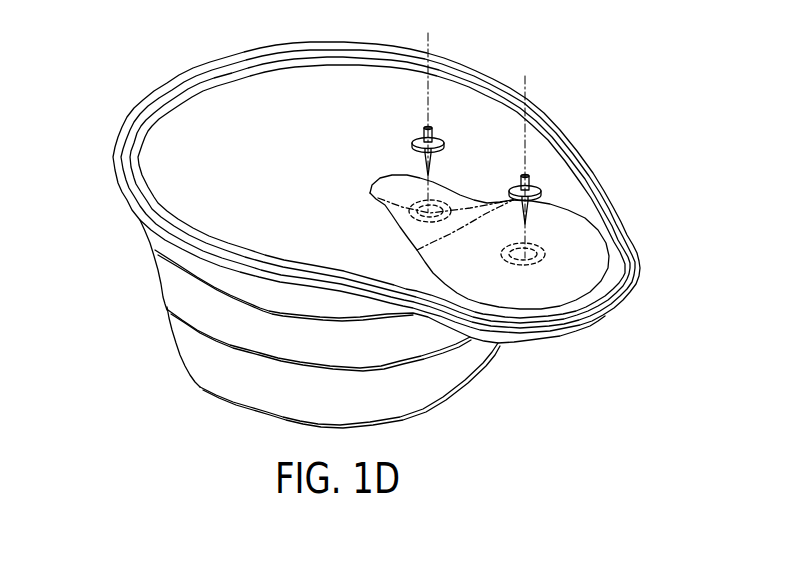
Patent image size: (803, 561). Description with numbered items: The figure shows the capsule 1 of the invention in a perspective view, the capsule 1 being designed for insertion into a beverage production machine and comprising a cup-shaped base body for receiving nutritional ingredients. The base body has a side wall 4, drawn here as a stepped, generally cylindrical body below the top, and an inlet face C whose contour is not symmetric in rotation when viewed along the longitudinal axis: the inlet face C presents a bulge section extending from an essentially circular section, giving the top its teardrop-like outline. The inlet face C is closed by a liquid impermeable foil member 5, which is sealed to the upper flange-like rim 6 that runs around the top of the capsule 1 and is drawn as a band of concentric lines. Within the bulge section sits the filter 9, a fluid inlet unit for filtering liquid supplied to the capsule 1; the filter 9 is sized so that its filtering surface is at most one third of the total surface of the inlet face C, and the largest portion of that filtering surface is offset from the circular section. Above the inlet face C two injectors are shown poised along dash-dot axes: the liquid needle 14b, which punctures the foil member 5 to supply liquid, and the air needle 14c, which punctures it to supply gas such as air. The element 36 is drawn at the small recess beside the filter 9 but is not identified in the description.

The capsule 1 is at (122, 97).
The inlet face C is at (248, 82).
The foil member 5 is at (467, 97).
The flange like rim 6 is at (642, 265).
The side wall 4 is at (170, 327).
The filter 9 is at (590, 275).
The cup recess 36 is at (372, 200).
The air needle 14c is at (403, 158).
The liquid needle 14b is at (497, 192).